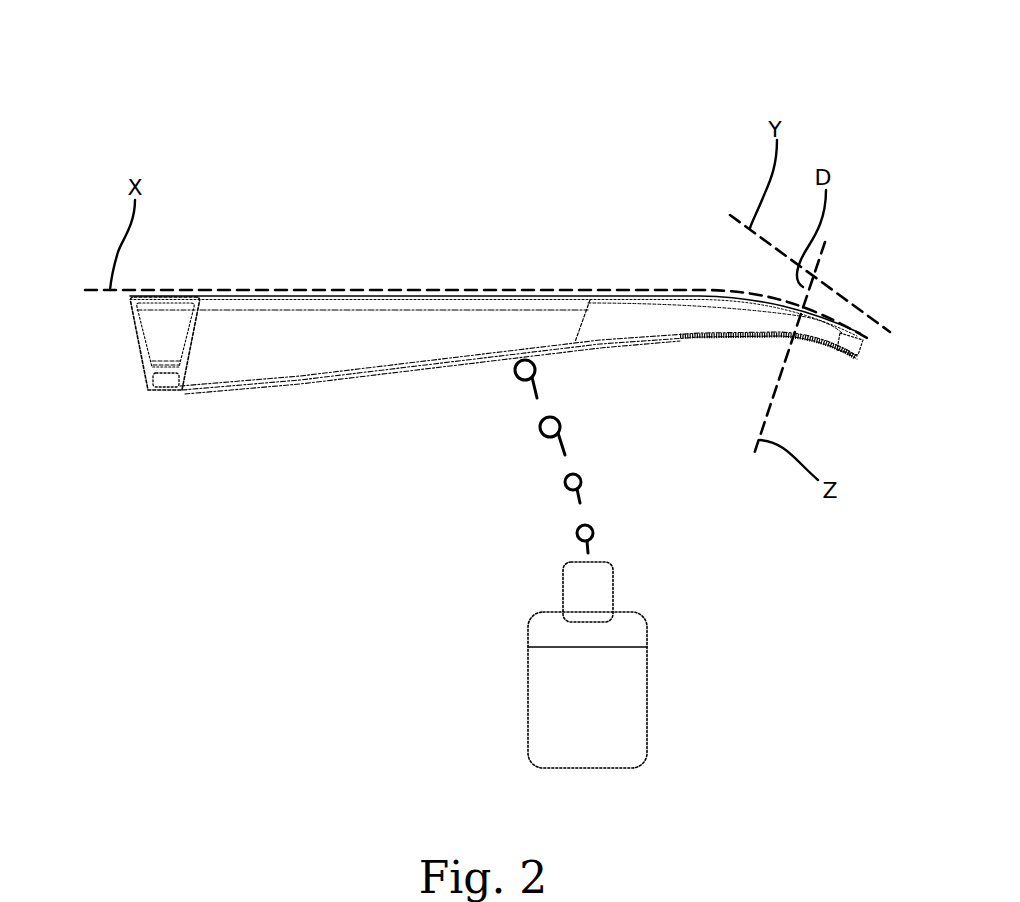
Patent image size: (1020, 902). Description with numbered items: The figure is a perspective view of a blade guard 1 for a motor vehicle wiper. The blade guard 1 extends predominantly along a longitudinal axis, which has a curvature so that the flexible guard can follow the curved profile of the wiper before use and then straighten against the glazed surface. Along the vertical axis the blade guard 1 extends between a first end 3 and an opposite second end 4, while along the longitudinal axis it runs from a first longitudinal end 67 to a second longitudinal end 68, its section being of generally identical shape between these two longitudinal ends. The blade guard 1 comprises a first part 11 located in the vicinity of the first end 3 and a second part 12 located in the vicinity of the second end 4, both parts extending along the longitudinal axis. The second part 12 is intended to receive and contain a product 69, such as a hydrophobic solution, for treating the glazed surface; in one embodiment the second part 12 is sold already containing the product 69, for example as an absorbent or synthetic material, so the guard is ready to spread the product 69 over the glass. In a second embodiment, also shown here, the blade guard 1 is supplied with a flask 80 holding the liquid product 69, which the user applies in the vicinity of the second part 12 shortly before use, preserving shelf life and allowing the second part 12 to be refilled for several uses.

The blade guard 1 is at (298, 178).
The first end 3 is at (333, 250).
The second end 4 is at (335, 415).
The first part 11 is at (467, 313).
The second part 12 is at (165, 408).
The first longitudinal end 67 is at (118, 361).
The second longitudinal end 68 is at (874, 351).
The product 69 is at (163, 385).
The flask 80 is at (666, 620).